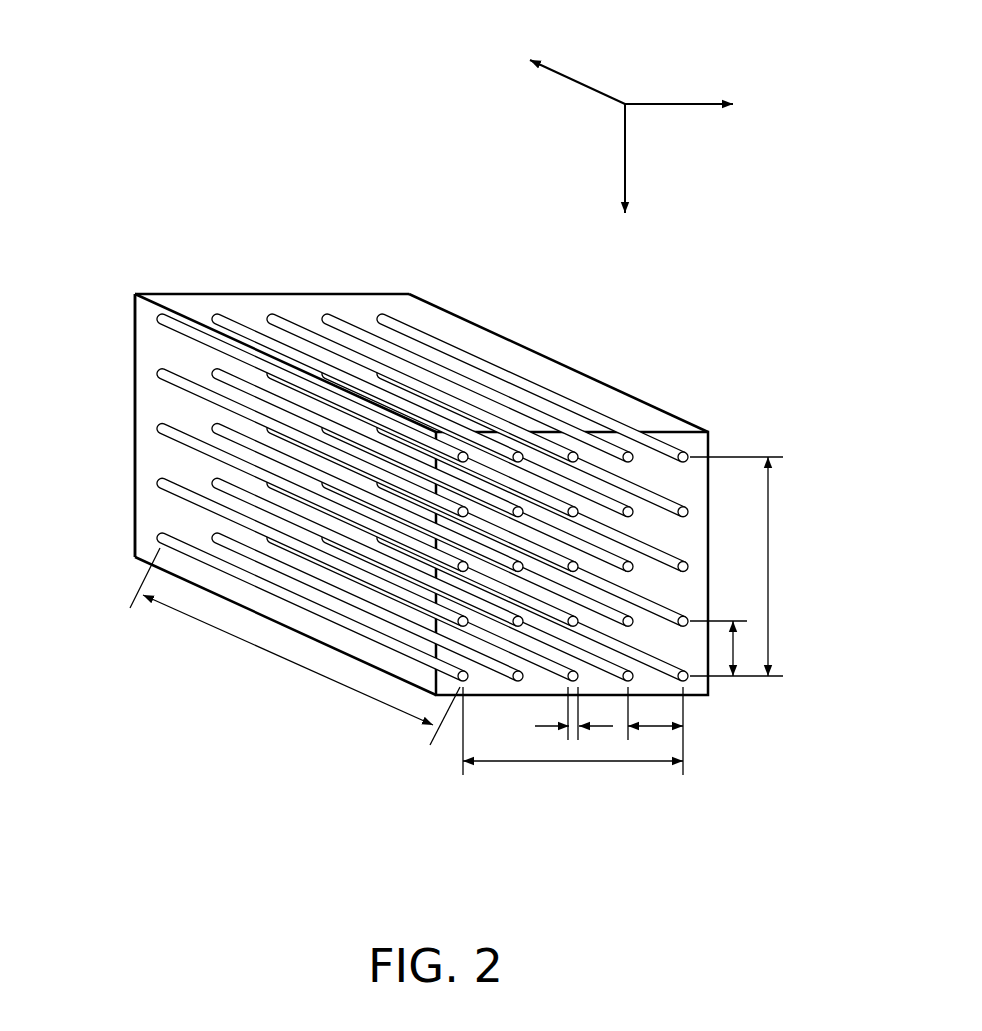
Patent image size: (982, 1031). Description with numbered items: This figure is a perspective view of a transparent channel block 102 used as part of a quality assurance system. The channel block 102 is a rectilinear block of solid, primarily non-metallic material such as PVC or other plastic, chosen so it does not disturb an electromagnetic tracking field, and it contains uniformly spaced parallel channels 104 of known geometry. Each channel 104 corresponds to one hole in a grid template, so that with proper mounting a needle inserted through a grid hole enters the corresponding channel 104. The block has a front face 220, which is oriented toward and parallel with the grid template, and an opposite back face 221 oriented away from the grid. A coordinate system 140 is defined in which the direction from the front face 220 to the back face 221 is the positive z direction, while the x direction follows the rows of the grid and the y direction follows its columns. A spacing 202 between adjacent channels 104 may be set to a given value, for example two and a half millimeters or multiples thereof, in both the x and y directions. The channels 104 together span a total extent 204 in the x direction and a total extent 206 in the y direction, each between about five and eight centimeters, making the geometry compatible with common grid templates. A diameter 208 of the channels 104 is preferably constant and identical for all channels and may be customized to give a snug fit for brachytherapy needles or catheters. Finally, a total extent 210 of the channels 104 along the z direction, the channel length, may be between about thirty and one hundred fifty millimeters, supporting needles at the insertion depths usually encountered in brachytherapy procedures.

The channel block 102 is at (420, 452).
The channels 104 is at (275, 318).
The coordinate system 140 is at (625, 97).
The spacing 202 is at (735, 651).
The total extent in the x direction 204 is at (595, 763).
The total extent in the y direction 206 is at (770, 565).
The diameter 208 is at (552, 728).
The total extent of the channels along the z direction 210 is at (287, 660).
The front face 220 is at (696, 442).
The back face 221 is at (135, 479).